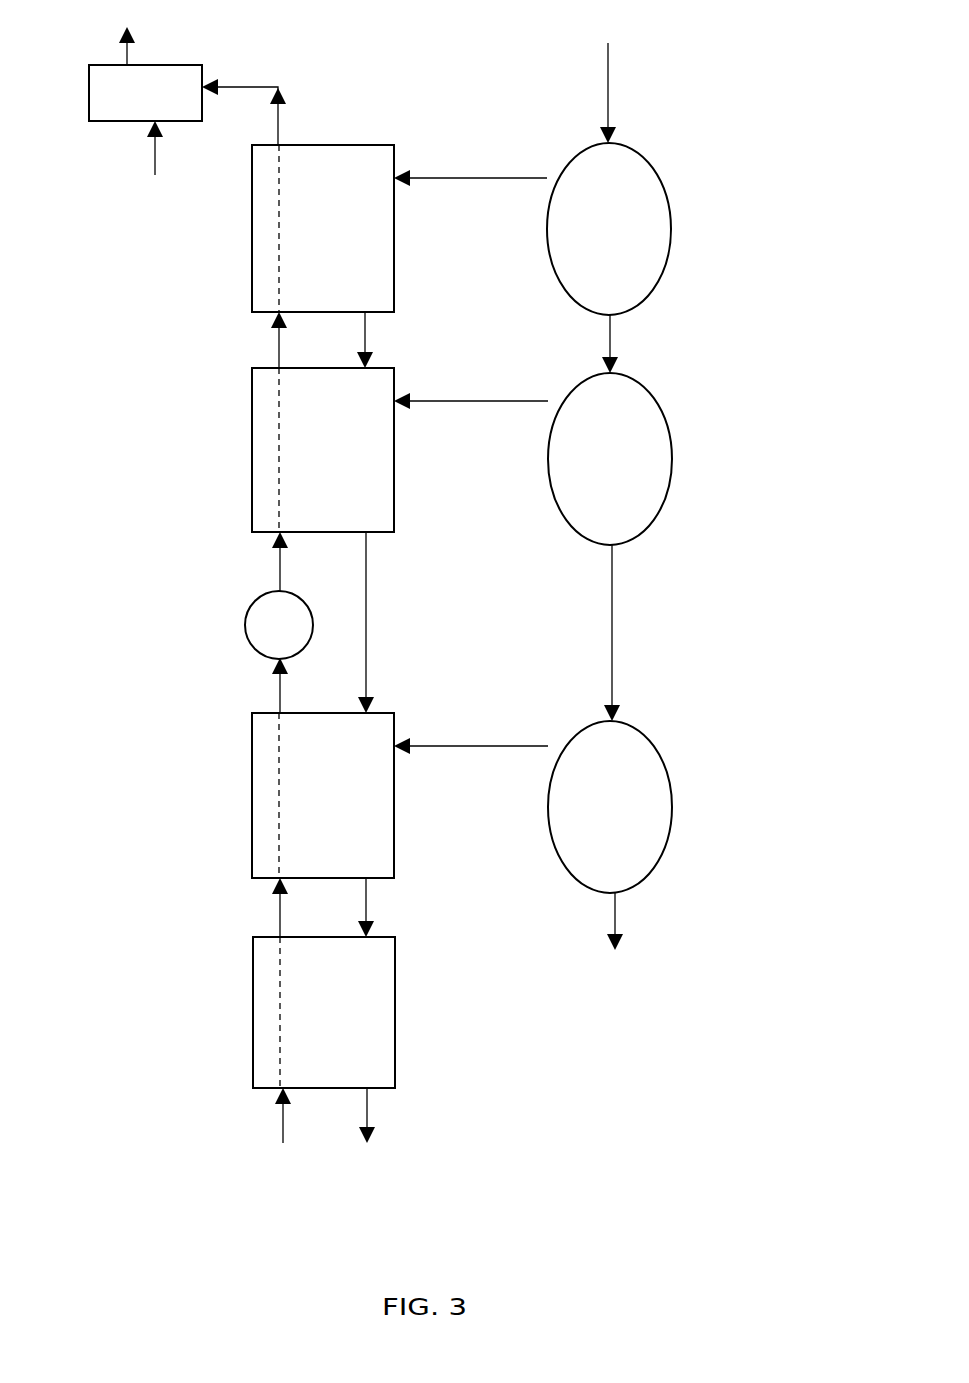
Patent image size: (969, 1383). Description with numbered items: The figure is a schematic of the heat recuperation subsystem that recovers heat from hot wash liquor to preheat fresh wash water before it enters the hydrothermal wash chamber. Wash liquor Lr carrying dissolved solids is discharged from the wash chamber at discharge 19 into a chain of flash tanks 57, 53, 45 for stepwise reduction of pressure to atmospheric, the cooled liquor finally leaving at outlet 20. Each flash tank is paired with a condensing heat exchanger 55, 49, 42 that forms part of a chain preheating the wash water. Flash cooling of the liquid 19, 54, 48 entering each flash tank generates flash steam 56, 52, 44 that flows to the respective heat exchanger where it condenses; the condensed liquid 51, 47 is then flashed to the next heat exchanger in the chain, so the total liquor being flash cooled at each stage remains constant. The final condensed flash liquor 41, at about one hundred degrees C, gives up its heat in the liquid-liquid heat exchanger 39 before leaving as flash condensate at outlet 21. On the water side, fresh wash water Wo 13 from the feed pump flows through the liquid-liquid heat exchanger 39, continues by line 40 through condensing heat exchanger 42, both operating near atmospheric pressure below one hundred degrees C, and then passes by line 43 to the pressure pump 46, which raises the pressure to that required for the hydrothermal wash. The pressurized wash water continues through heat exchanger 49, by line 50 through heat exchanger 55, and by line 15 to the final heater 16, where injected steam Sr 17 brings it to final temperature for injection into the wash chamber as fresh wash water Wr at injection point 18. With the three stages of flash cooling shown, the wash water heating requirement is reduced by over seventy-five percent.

The wash water 13 is at (250, 1156).
The preheated wash water flow to heater 15 is at (270, 112).
The heater 16 is at (145, 93).
The steam 17 is at (156, 164).
The wash water injection point 18 is at (91, 36).
The wash liquor discharge 19 is at (594, 76).
The wash liquor outlet 20 is at (610, 958).
The flash condensate outlet 21 is at (432, 1156).
The liquid-liquid heat exchanger 39 is at (326, 1012).
The wash water line from HE0 to HE1 40 is at (250, 907).
The final condensed flash liquor 41 is at (403, 907).
The condensing heat exchanger 42 is at (325, 795).
The wash water line to pressure pump 43 is at (249, 685).
The flash steam 44 is at (471, 730).
The flash tank 45 is at (614, 807).
The pressure pump 46 is at (220, 624).
The condensed liquid 47 is at (393, 622).
The liquid entering flash tank 48 is at (636, 633).
The condensing heat exchanger 49 is at (324, 450).
The wash water line from HE2 to HE3 50 is at (247, 340).
The condensed liquid 51 is at (395, 340).
The flash steam 52 is at (471, 384).
The flash tank 53 is at (614, 459).
The liquid entering flash tank 54 is at (635, 344).
The condensing heat exchanger 55 is at (323, 228).
The flash steam 56 is at (470, 170).
The flash tank 57 is at (613, 229).